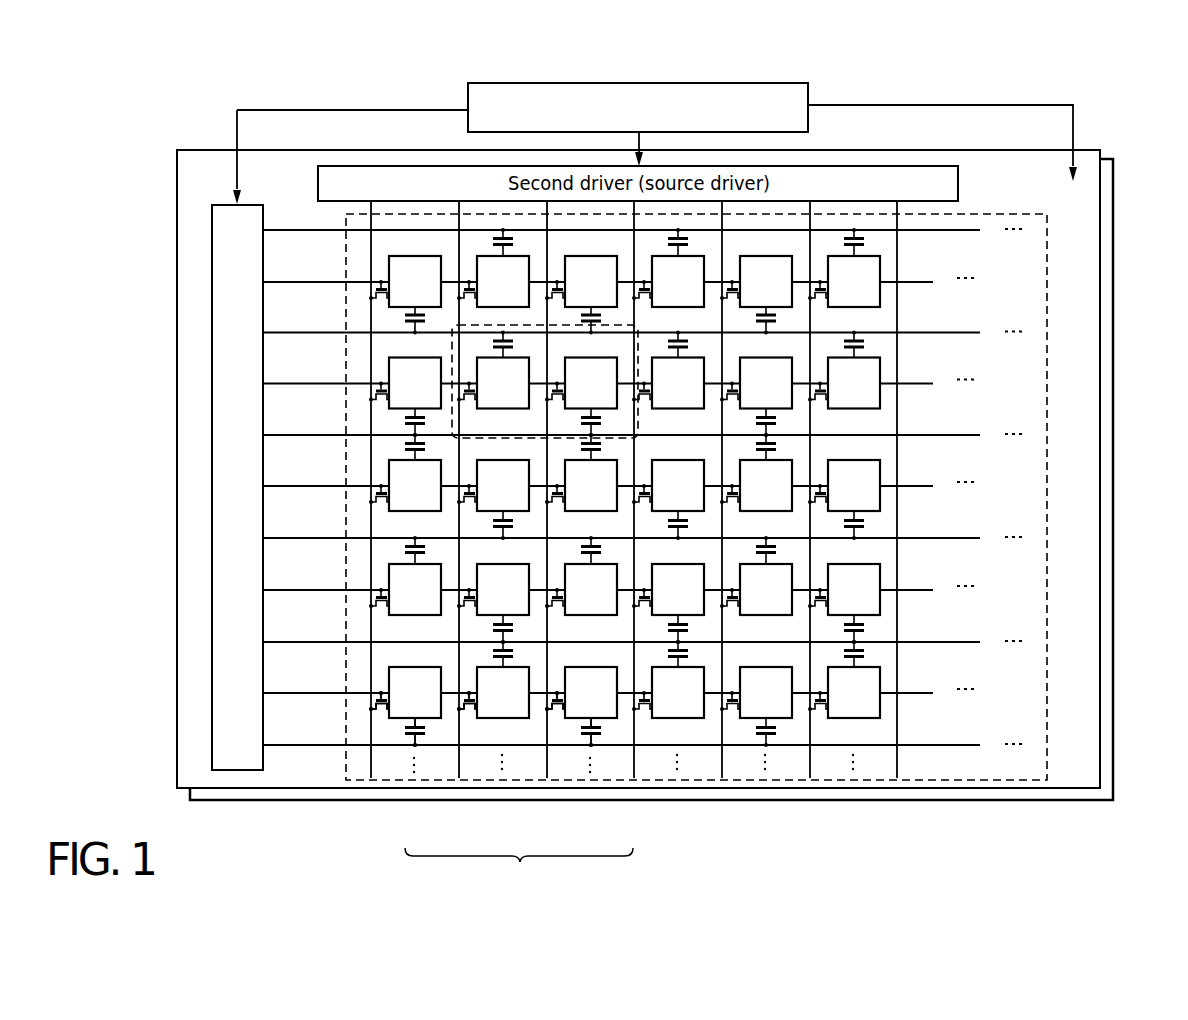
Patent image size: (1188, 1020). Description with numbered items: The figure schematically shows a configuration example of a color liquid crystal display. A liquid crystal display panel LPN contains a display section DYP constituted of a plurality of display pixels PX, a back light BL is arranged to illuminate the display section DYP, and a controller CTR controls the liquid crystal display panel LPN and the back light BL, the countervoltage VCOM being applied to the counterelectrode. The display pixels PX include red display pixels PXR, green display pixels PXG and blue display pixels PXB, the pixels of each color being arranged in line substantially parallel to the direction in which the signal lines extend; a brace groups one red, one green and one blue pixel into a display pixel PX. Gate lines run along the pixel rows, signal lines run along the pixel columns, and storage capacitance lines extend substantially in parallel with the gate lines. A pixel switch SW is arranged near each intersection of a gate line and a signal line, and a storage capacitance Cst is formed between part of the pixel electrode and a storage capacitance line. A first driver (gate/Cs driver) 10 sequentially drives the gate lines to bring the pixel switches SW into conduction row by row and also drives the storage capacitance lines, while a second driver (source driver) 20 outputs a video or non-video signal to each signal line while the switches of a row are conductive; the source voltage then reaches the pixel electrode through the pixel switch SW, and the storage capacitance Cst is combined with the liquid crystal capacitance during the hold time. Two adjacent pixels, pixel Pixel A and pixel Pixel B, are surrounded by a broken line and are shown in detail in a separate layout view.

The first driver (gate/Cs driver) 10 is at (211, 670).
The second driver (source driver) 20 is at (960, 176).
The controller CTR is at (809, 90).
The countervoltage VCOM is at (942, 130).
The display section DYP is at (1047, 363).
The liquid crystal display panel LPN is at (1107, 477).
The back light BL is at (1119, 582).
The red display pixel PXR is at (420, 626).
The green display pixel PXG is at (483, 626).
The blue display pixel PXB is at (597, 626).
The display pixel PX is at (519, 865).
The pixel switch SW is at (380, 711).
The storage capacitance Cst is at (408, 743).
The pixel A Pixel A is at (503, 383).
The pixel B Pixel B is at (591, 383).